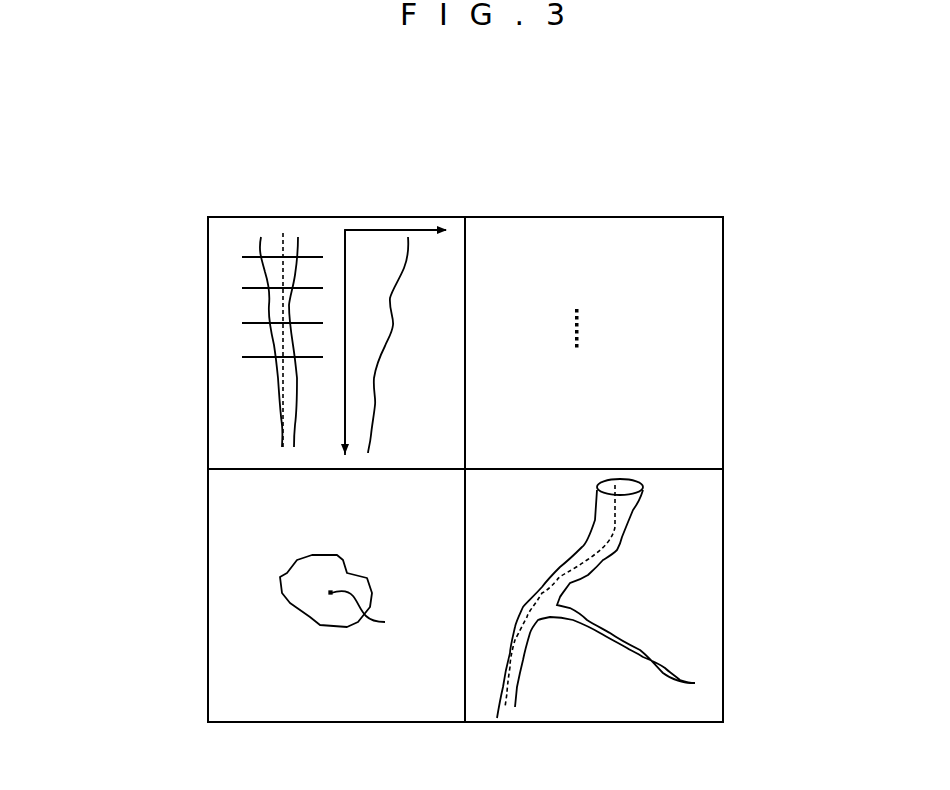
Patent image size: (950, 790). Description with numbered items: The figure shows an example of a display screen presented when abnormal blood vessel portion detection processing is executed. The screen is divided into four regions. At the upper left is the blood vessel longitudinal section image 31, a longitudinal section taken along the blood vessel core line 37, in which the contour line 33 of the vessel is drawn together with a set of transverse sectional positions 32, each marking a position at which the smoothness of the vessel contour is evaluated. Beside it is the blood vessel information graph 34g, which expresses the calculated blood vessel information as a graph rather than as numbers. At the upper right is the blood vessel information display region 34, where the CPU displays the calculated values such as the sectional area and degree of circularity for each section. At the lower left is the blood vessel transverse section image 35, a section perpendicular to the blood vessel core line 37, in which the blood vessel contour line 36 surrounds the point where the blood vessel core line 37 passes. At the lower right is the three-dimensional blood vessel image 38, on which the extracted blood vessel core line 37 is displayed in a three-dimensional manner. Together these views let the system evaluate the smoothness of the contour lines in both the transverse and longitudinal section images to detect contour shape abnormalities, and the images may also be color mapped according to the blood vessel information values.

The blood vessel longitudinal section image 31 is at (268, 240).
The sectional position 32 is at (235, 354).
The contour line 33 is at (283, 392).
The blood vessel information display region 34 is at (723, 217).
The blood vessel information graph 34g is at (381, 226).
The blood vessel transverse section image 35 is at (290, 557).
The blood vessel contour line 36 is at (300, 612).
The blood vessel core line 37 is at (642, 582).
The 3D blood vessel image 38 is at (641, 517).